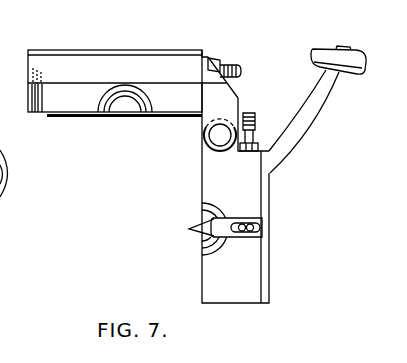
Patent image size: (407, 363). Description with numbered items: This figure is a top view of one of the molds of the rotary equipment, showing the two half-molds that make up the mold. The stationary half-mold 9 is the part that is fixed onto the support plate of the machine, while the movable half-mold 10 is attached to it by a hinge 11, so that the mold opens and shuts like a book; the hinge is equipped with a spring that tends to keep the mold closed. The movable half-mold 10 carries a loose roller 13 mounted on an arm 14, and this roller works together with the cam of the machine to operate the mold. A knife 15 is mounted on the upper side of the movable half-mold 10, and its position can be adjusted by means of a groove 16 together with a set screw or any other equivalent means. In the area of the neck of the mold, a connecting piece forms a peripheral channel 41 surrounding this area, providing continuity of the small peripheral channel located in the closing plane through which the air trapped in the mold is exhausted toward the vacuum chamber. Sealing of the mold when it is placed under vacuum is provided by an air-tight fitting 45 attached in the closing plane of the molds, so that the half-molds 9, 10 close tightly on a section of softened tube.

The stationary half-mold 9 is at (155, 63).
The movable half-mold 10 is at (262, 277).
The hinge 11 is at (221, 130).
The loose roller 13 is at (364, 65).
The arm 14 is at (326, 104).
The knife 15 is at (252, 218).
The groove 16 is at (262, 224).
The peripheral channel 41 is at (232, 65).
The air-tight fitting 45 is at (90, 117).